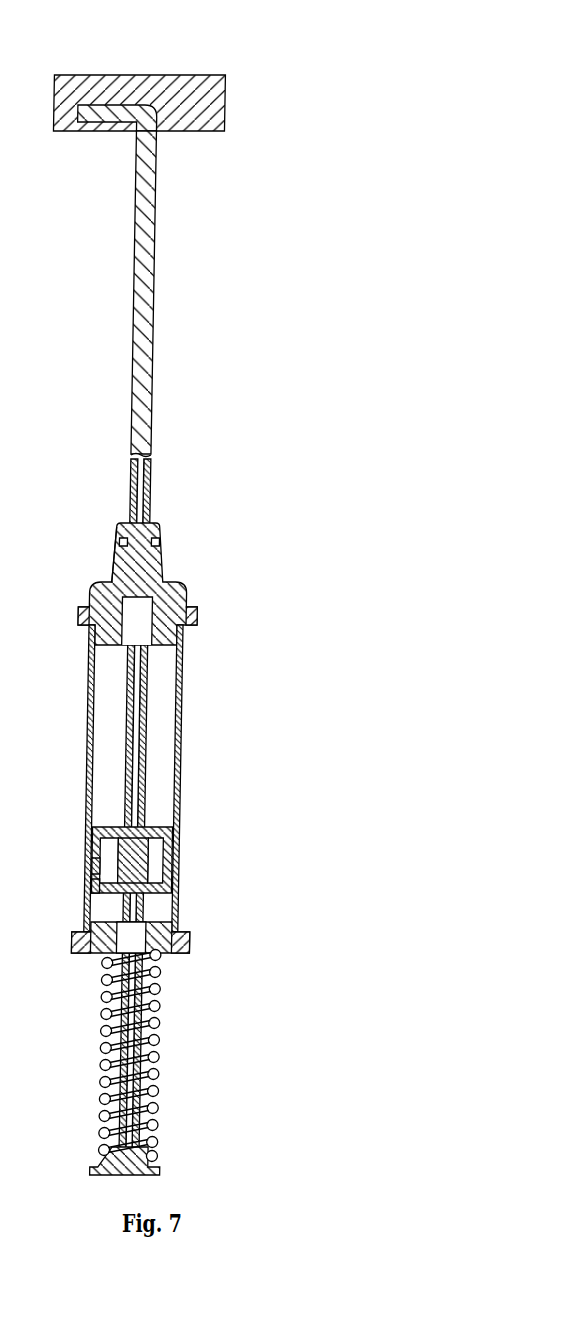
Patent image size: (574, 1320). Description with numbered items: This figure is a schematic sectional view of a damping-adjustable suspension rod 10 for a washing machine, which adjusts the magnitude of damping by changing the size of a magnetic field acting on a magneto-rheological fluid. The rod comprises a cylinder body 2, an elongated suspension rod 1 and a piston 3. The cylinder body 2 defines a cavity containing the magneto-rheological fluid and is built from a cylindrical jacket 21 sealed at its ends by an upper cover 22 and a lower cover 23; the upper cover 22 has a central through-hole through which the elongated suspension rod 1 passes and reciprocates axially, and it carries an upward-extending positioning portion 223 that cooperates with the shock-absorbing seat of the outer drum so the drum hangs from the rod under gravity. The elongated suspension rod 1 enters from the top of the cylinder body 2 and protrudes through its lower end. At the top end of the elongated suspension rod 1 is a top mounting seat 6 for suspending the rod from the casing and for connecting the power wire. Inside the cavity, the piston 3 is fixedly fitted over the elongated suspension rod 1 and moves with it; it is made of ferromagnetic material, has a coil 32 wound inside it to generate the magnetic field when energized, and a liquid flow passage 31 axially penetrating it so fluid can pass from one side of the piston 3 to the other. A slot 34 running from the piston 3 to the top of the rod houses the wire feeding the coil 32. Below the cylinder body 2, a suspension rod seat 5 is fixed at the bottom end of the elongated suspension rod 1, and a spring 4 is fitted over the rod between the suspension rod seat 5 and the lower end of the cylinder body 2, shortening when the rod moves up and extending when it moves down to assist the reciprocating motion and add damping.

The damping-adjustable suspension rod 10 is at (71, 48).
The top mounting seat 6 is at (200, 102).
The elongated suspension rod 1 is at (137, 490).
The cylinder body 2 is at (140, 767).
The cylindrical jacket 21 is at (175, 751).
The upper cover 22 is at (146, 584).
The positioning portion 223 is at (118, 573).
The lower cover 23 is at (172, 956).
The piston 3 is at (129, 862).
The liquid flow passage 31 is at (100, 887).
The coil 32 is at (108, 867).
The slot 34 is at (122, 861).
The spring 4 is at (150, 1040).
The suspension rod seat 5 is at (160, 1172).